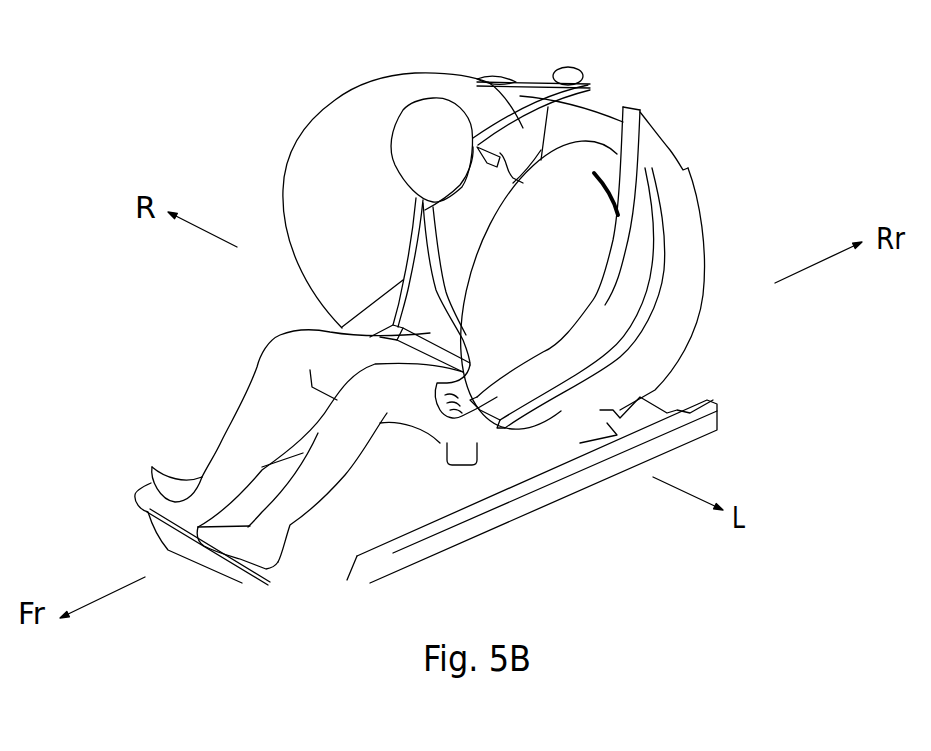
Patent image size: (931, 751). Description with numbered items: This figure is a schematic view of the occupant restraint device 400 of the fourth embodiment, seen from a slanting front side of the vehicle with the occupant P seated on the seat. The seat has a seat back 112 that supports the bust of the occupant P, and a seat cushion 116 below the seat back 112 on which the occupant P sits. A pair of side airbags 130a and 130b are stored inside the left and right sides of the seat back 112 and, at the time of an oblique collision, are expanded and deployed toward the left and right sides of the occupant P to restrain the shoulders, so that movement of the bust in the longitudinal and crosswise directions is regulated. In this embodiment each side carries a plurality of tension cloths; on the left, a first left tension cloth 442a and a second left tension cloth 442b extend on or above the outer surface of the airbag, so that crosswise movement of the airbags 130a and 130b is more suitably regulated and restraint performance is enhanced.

The airbag 130b is at (280, 130).
The airbag 130a is at (724, 192).
The seat back 112 is at (591, 120).
The seat cushion 116 is at (490, 447).
The first left tension cloth 442a is at (567, 353).
The second left tension cloth 442b is at (617, 333).
The occupant restraint device 400 is at (715, 325).
The occupant P is at (412, 98).